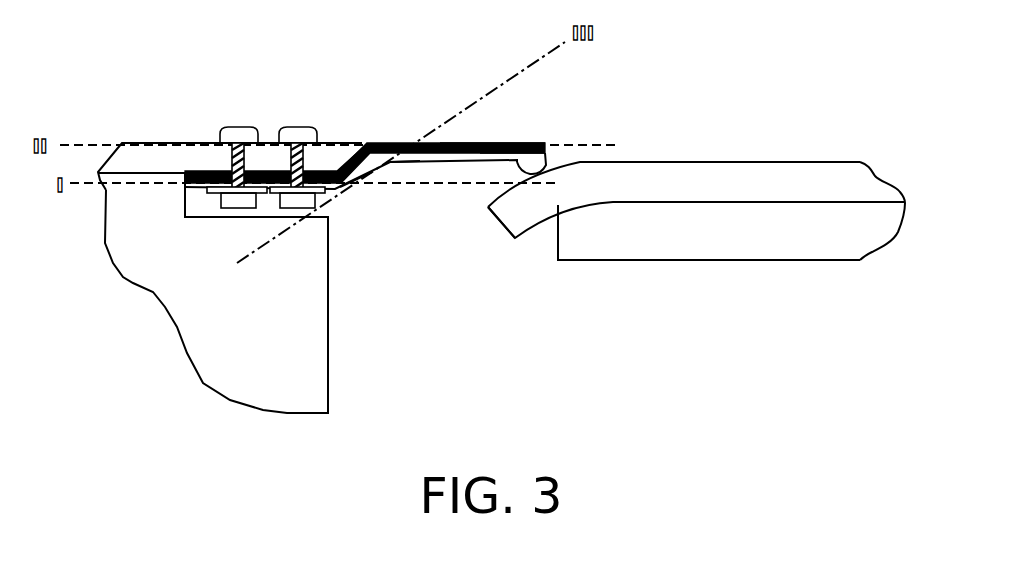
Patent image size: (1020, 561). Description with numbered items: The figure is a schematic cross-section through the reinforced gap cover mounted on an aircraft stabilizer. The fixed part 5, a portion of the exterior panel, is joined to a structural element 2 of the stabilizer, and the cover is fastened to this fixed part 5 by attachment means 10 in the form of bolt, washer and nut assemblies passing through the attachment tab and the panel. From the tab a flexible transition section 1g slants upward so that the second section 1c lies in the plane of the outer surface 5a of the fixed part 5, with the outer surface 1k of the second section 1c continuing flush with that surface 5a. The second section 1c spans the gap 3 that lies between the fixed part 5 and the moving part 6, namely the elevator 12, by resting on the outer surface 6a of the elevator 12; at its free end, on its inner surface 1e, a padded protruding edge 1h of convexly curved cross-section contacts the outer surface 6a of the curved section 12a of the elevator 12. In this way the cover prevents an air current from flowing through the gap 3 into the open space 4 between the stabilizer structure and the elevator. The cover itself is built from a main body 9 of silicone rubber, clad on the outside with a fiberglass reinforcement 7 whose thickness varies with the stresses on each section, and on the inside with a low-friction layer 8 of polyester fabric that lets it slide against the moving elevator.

The second section 1c is at (500, 142).
The inner surface of the second section 1e is at (488, 163).
The transition section 1g is at (383, 138).
The inner protruding edge 1h is at (531, 162).
The outer surface of the second section 1k is at (520, 141).
The structural element of the vehicle 2 is at (255, 345).
The gap 3 is at (430, 213).
The inside of the moving part 4 is at (426, 327).
The fixed part 5 is at (200, 165).
The outer surface of the fixed part of the vehicle 5a is at (266, 142).
The moving part of the vehicle 6 is at (657, 228).
The outer surface of the moving part 6a is at (758, 160).
The reinforcement means 7 is at (358, 148).
The low-friction layer 8 is at (370, 190).
The main interior body of elastic material 9 is at (397, 167).
The attachment means 10 is at (302, 203).
The elevator 12 is at (688, 178).
The curved section of the elevator 12a is at (530, 202).